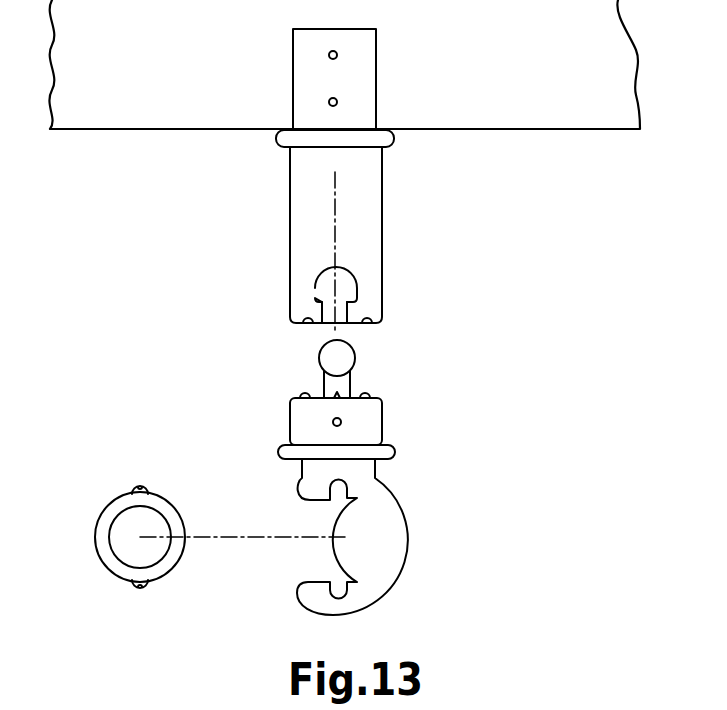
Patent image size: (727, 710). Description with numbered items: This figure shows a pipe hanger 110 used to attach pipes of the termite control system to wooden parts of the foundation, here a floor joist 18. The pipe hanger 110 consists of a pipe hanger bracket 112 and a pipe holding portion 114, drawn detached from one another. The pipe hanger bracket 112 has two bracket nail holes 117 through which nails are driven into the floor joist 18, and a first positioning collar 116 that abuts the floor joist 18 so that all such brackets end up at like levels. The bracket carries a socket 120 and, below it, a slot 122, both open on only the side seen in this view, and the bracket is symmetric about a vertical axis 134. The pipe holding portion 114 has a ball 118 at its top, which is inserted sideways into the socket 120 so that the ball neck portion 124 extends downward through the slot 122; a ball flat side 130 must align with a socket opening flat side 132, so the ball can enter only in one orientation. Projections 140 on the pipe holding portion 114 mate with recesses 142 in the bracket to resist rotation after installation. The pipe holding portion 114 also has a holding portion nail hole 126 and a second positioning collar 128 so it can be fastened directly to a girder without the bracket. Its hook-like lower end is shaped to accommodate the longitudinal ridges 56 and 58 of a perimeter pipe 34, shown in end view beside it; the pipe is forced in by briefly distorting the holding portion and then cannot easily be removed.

The floor joist 18 is at (518, 50).
The pipe hanger bracket 112 is at (368, 180).
The bracket nail holes 117 is at (328, 58).
The first positioning collar 116 is at (284, 142).
The vertical axis 134 is at (336, 234).
The socket 120 is at (347, 280).
The socket opening flat side 132 is at (318, 290).
The slot 122 is at (347, 310).
The recesses 142 is at (306, 328).
The pipe hanger 110 is at (541, 333).
The ball 118 is at (348, 366).
The ball flat side 130 is at (321, 355).
The ball neck portion 124 is at (323, 385).
The holding portion nail hole 126 is at (342, 422).
The projections 140 is at (302, 397).
The second positioning collar 128 is at (286, 453).
The pipe holding portion 114 is at (363, 472).
The perimeter pipe 34 is at (108, 510).
The longitudinal ridge 56 is at (138, 482).
The longitudinal ridge 58 is at (138, 596).